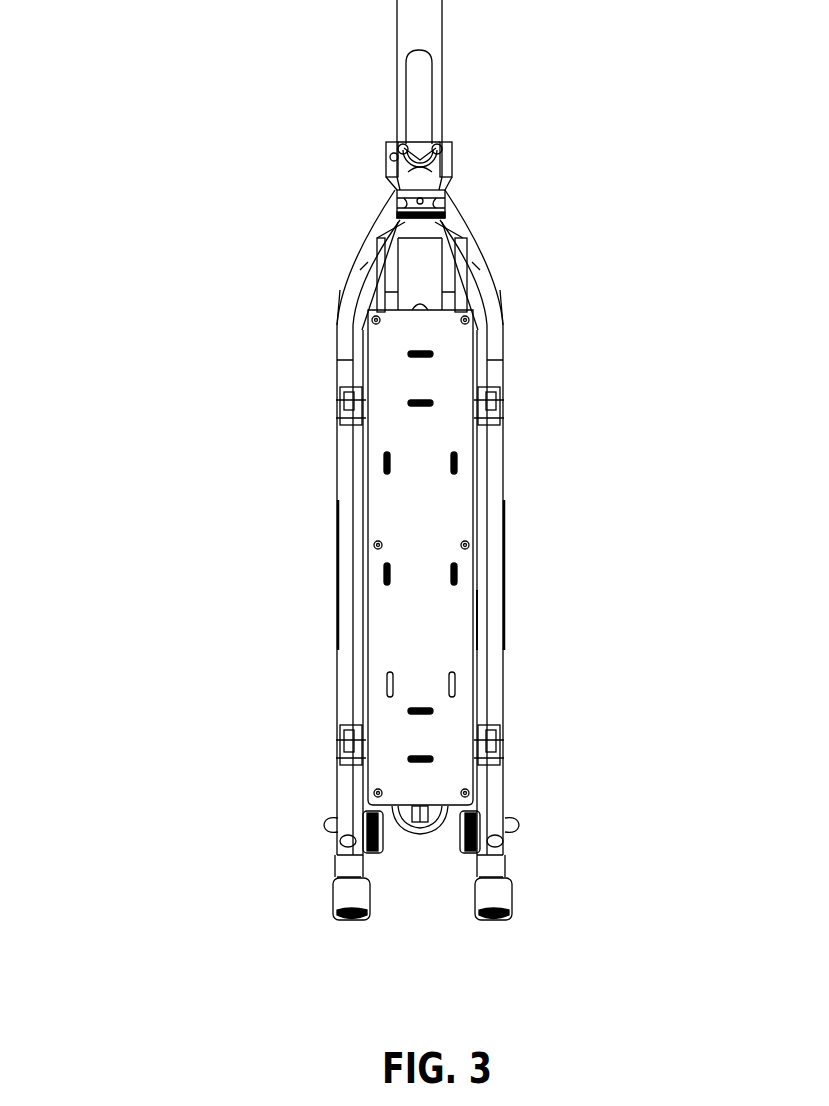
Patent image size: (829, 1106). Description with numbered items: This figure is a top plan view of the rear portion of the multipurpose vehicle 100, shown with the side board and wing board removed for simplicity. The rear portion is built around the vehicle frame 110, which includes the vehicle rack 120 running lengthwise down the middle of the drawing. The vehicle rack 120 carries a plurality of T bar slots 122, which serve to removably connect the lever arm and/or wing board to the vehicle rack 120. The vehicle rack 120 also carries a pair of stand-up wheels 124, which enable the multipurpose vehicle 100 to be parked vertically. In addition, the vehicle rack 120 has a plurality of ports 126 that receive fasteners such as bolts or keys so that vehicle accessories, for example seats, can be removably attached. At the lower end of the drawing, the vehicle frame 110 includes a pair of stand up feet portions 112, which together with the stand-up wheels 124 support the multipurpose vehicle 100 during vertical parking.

The multipurpose vehicle 100 is at (322, 106).
The vehicle frame 110 is at (425, 116).
The stand up feet portion 112 is at (350, 897).
The vehicle rack 120 is at (378, 517).
The T bar slots 122 is at (345, 405).
The stand-up wheels 124 is at (366, 826).
The ports 126 is at (373, 318).